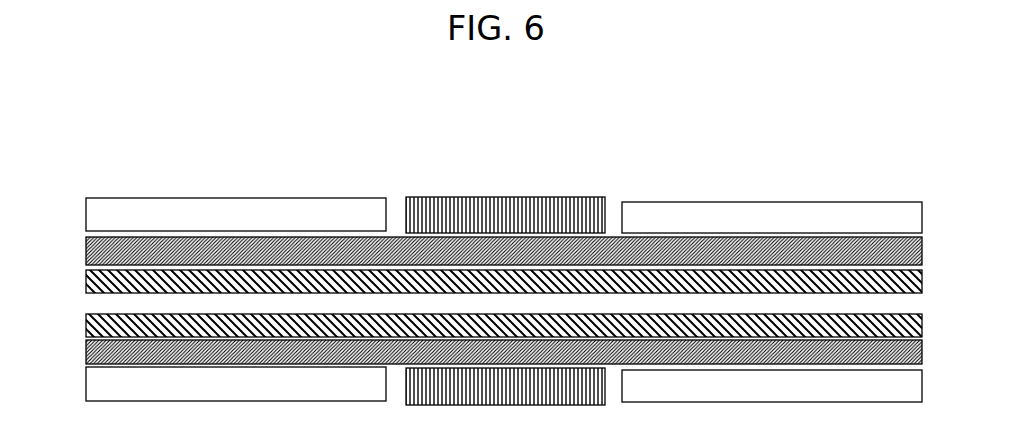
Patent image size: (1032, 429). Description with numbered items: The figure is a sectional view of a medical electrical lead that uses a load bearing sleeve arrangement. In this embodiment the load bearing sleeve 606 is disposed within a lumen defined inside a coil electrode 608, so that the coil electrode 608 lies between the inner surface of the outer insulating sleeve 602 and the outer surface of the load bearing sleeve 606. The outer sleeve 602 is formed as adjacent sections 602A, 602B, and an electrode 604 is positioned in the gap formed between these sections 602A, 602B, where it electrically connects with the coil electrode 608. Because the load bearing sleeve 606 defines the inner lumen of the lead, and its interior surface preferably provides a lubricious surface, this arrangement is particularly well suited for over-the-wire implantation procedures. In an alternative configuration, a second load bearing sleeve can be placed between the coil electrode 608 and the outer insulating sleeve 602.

The outer insulating sleeve 602 is at (298, 183).
The section of the outer sleeve 602A is at (175, 198).
The section of the outer sleeve 602B is at (815, 202).
The electrode 604 is at (530, 197).
The load bearing sleeve 606 is at (86, 282).
The coil electrode 608 is at (86, 255).